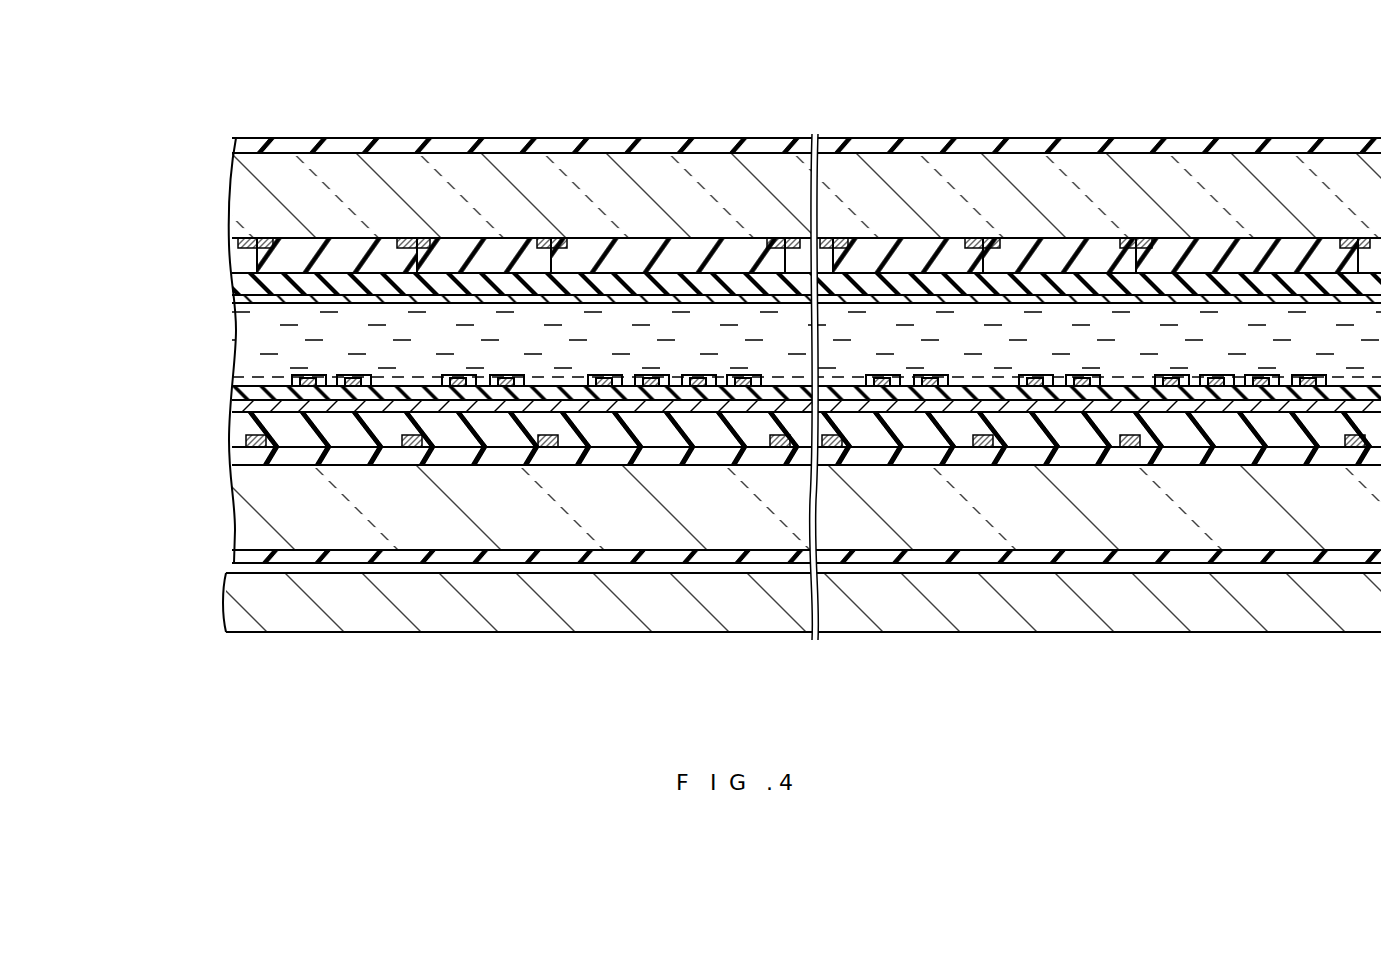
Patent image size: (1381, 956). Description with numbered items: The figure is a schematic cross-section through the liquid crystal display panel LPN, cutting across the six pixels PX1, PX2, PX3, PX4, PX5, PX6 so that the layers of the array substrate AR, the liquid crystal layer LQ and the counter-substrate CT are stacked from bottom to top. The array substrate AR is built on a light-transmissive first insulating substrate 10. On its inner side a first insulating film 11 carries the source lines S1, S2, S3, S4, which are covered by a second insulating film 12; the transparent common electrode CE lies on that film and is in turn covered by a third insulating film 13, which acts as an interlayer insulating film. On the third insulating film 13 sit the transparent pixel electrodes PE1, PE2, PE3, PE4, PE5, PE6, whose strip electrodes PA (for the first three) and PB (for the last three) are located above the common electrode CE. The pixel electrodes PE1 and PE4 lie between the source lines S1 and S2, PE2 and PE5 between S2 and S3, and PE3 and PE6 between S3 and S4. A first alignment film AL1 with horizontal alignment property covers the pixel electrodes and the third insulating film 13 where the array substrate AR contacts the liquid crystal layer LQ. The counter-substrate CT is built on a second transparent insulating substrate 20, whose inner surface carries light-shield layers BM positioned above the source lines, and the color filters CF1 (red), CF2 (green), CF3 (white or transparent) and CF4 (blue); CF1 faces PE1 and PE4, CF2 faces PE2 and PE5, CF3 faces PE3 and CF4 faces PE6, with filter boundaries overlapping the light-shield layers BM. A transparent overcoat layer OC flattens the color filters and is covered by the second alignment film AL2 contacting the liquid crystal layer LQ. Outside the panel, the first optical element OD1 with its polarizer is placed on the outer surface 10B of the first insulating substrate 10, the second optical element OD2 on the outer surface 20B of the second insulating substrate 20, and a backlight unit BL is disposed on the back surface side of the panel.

The counter-substrate CT is at (740, 165).
The array substrate AR is at (738, 542).
The second optical element OD2 is at (242, 148).
The first optical element OD1 is at (242, 556).
The second insulating substrate 20 is at (242, 185).
The outer surface of the second insulating substrate 20B is at (626, 134).
The first insulating substrate 10 is at (242, 510).
The outer surface of the first insulating substrate 10B is at (362, 566).
The light-shield layer BM is at (256, 240).
The color filter CF1 is at (305, 255).
The color filter CF2 is at (475, 255).
The color filter CF3 is at (668, 255).
The color filter CF4 is at (1225, 255).
The pixel PX1 is at (366, 134).
The pixel PX2 is at (535, 134).
The pixel PX3 is at (735, 134).
The pixel PX4 is at (948, 134).
The pixel PX5 is at (1101, 134).
The pixel PX6 is at (1266, 134).
The liquid crystal display panel LPN is at (1290, 134).
The overcoat layer OC is at (242, 285).
The second alignment film AL2 is at (242, 300).
The first alignment film AL1 is at (242, 380).
The liquid crystal layer LQ is at (242, 330).
The third insulating film 13 is at (242, 392).
The common electrode CE is at (242, 405).
The second insulating film 12 is at (242, 430).
The first insulating film 11 is at (242, 455).
The source line S1 is at (256, 447).
The source line S2 is at (412, 447).
The source line S3 is at (548, 447).
The source line S4 is at (780, 447).
The strip electrode PA is at (526, 544).
The strip electrode PB is at (1096, 544).
The pixel electrode PE1 is at (309, 386).
The pixel electrode PE2 is at (459, 386).
The pixel electrode PE3 is at (744, 386).
The pixel electrode PE4 is at (931, 386).
The pixel electrode PE5 is at (1083, 386).
The pixel electrode PE6 is at (1172, 386).
The backlight unit BL is at (236, 605).